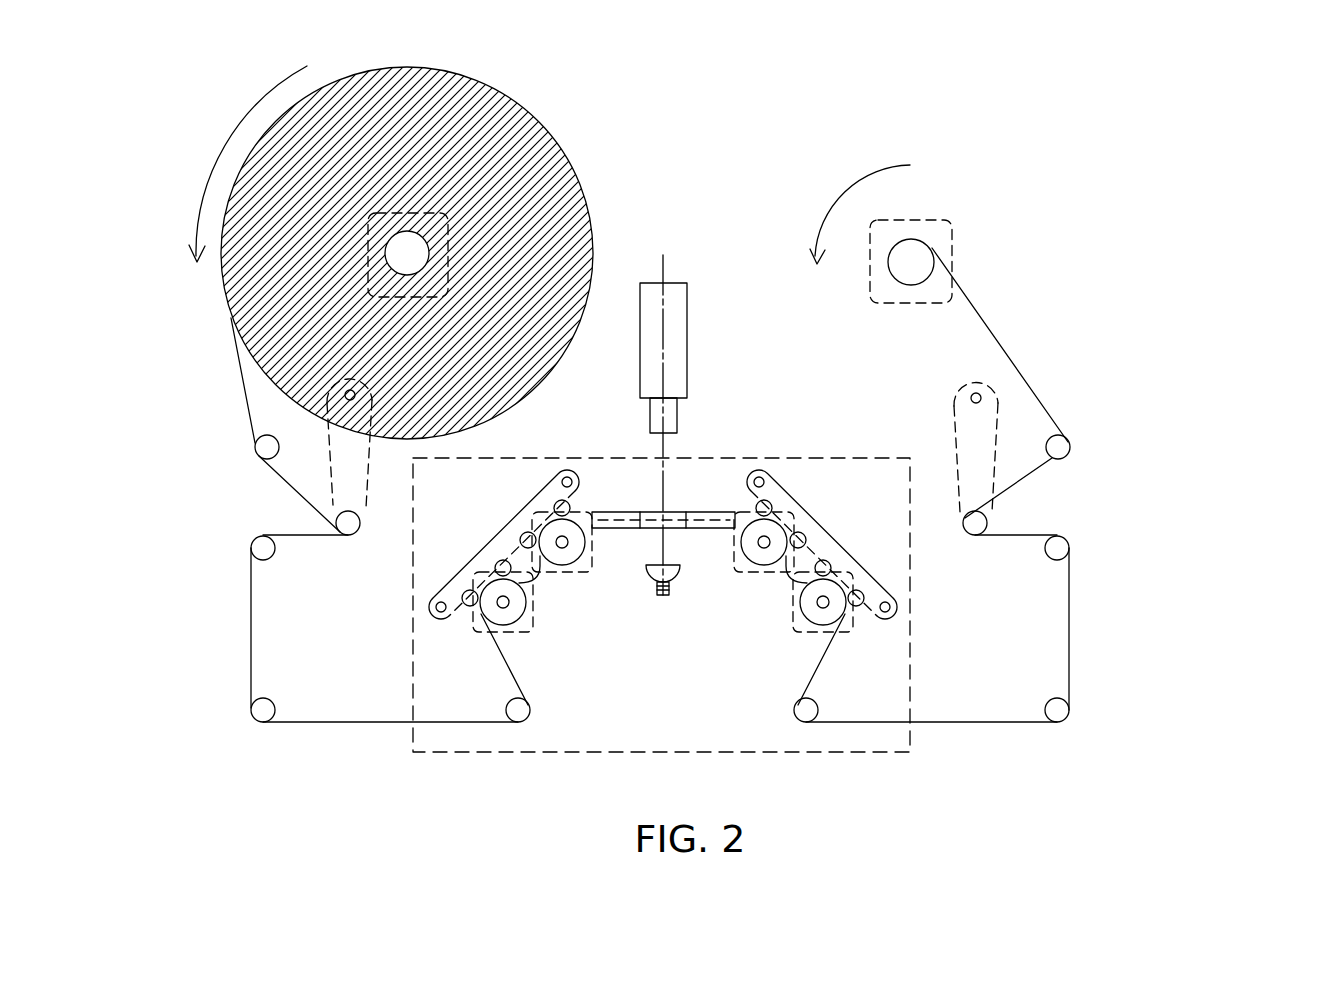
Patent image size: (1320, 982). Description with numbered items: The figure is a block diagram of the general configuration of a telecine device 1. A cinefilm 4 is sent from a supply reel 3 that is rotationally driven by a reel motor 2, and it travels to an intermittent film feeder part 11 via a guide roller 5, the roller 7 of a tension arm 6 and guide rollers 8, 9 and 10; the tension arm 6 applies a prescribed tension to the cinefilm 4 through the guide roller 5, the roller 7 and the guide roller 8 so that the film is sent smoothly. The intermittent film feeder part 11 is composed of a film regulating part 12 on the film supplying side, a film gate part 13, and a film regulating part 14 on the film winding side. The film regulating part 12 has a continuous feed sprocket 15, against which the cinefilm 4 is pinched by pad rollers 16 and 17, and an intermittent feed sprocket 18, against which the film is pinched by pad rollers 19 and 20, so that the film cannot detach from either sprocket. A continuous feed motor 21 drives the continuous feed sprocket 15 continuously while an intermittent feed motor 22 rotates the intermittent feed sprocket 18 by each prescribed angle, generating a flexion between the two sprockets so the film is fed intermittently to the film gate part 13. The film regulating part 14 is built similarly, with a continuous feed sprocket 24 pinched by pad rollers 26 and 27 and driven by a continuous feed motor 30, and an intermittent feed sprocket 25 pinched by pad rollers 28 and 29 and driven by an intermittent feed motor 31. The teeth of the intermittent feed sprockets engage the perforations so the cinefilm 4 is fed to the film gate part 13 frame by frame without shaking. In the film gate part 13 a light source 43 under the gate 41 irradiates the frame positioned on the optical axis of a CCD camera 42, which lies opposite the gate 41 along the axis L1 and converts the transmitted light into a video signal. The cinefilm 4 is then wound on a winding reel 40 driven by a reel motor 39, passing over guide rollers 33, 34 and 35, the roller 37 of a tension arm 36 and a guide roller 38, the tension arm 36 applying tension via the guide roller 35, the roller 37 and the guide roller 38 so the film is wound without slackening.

The telecine device 1 is at (1014, 137).
The reel motor 2 is at (462, 198).
The supply reel 3 is at (412, 230).
The cinefilm 4 is at (244, 381).
The guide roller 5 is at (280, 447).
The tension arm 6 is at (362, 478).
The roller 7 is at (361, 523).
The guide roller 8 is at (276, 548).
The guide roller 9 is at (276, 709).
The guide roller 10 is at (531, 710).
The intermittent film feeder part 11 is at (906, 754).
The film regulating part 12 is at (489, 530).
The film gate part 13 is at (670, 506).
The film regulating part 14 is at (836, 533).
The continuous feed sprocket 15 is at (527, 608).
The pad roller 16 is at (470, 607).
The pad roller 17 is at (500, 563).
The intermittent feed sprocket 18 is at (566, 562).
The pad roller 19 is at (525, 533).
The pad roller 20 is at (570, 508).
The continuous feed motor 21 is at (478, 634).
The intermittent feed motor 22 is at (597, 545).
The continuous feed sprocket 24 is at (812, 621).
The intermittent feed sprocket 25 is at (762, 563).
The pad roller 26 is at (858, 608).
The pad roller 27 is at (826, 562).
The pad roller 28 is at (801, 533).
The pad roller 29 is at (756, 508).
The continuous feed motor 30 is at (780, 605).
The intermittent feed motor 31 is at (673, 528).
The guide roller 33 is at (819, 710).
The guide roller 34 is at (1046, 705).
The guide roller 35 is at (1046, 553).
The tension arm 36 is at (957, 451).
The roller 37 is at (988, 523).
The guide roller 38 is at (1071, 447).
The reel motor 39 is at (953, 238).
The winding reel 40 is at (911, 240).
The gate 41 is at (669, 591).
The CCD camera 42 is at (688, 320).
The light source 43 is at (662, 596).
The center line L1 is at (665, 445).